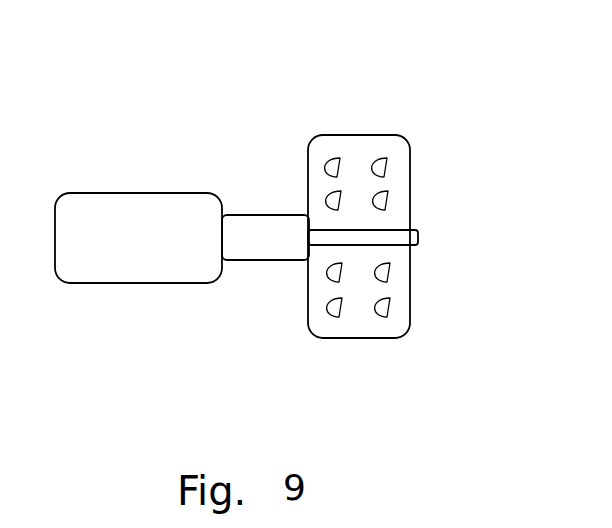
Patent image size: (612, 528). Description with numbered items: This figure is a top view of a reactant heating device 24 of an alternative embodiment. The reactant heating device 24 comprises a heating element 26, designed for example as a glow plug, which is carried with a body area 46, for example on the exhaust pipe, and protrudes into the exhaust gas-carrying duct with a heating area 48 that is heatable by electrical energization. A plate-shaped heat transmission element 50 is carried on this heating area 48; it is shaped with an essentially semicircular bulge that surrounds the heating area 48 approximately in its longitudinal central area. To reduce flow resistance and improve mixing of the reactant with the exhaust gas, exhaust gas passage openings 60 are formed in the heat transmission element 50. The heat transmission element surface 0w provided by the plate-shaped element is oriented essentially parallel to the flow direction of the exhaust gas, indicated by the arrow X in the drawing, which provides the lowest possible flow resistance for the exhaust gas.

The reactant heating device 24 is at (320, 217).
The body area 46 is at (132, 202).
The heating element 26 is at (257, 273).
The heat transmission element 50 is at (402, 182).
The heating area 48 is at (419, 236).
The exhaust gas passage openings 60 is at (381, 272).
The direction X is at (492, 237).
The heat transmission element surface 0w is at (357, 317).